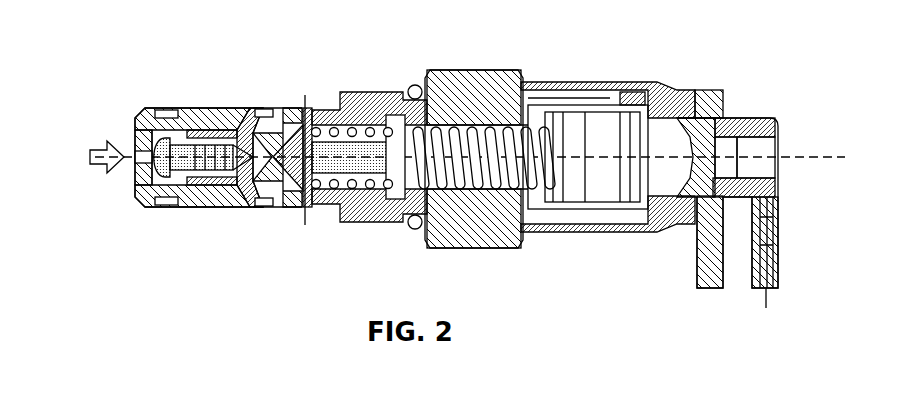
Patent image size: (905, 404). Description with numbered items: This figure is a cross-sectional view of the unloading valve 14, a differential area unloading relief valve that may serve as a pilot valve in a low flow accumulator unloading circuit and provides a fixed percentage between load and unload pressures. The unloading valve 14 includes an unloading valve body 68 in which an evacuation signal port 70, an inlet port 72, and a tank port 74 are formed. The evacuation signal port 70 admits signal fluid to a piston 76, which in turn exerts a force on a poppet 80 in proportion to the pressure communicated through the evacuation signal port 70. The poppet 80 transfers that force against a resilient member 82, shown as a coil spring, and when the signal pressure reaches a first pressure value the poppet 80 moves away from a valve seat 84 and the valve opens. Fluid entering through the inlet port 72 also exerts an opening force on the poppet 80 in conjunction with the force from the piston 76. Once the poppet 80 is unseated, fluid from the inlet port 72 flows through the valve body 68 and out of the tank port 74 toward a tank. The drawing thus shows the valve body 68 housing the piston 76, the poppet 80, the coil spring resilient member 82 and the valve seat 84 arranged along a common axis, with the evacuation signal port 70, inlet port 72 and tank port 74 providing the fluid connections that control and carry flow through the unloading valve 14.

The unloading valve 14 is at (768, 71).
The unloading valve body 68 is at (473, 82).
The evacuation signal port 70 is at (135, 158).
The inlet port 72 is at (233, 108).
The tank port 74 is at (298, 110).
The piston 76 is at (186, 172).
The poppet 80 is at (274, 196).
The resilient member 82 is at (437, 188).
The valve seat 84 is at (270, 162).